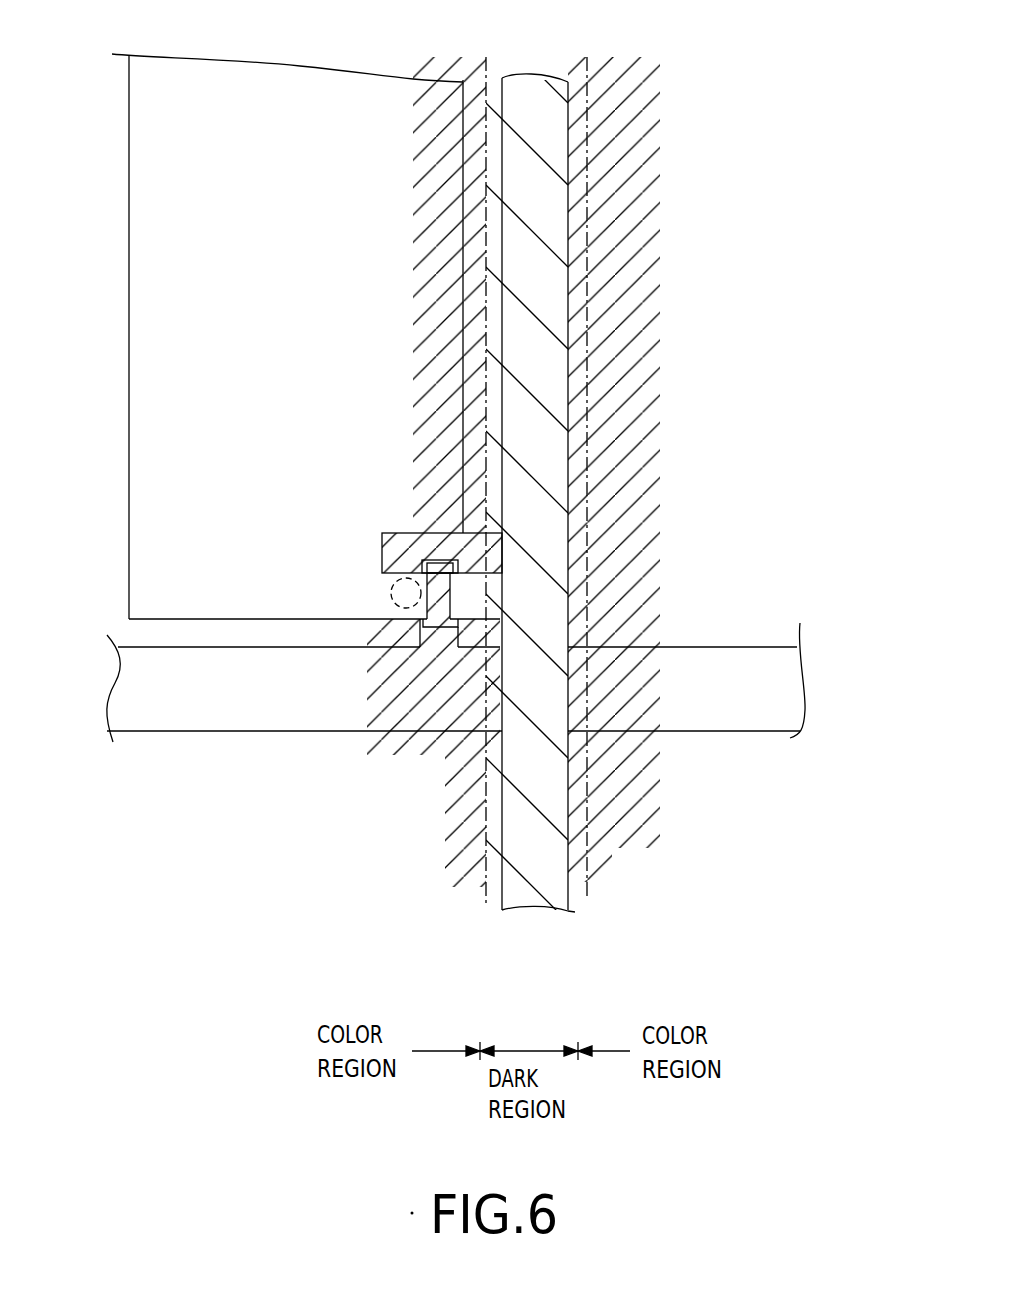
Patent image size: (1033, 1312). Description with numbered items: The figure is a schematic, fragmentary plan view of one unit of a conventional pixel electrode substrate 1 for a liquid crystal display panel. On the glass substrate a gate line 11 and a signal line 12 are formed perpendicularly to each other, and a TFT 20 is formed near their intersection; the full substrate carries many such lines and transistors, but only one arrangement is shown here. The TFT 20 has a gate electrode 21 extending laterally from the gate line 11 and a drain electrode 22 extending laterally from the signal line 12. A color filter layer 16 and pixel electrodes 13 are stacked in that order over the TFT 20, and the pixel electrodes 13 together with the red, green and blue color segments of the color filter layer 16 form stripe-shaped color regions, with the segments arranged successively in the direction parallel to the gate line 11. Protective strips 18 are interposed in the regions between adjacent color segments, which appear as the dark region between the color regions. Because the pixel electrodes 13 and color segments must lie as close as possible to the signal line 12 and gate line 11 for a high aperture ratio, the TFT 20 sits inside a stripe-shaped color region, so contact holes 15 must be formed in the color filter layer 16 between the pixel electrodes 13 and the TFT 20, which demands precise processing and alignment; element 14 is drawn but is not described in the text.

The pixel electrode substrate 1 is at (702, 82).
The gate line 11 is at (690, 665).
The signal line 12 is at (540, 370).
The pixel electrode 13 is at (157, 412).
The insulating layer 14 is at (393, 612).
The contact hole 15 is at (391, 590).
The color filter layer 16 is at (460, 878).
The protective strip 18 is at (573, 897).
The TFT 20 is at (437, 557).
The gate electrode 21 is at (455, 560).
The drain electrode 22 is at (493, 597).